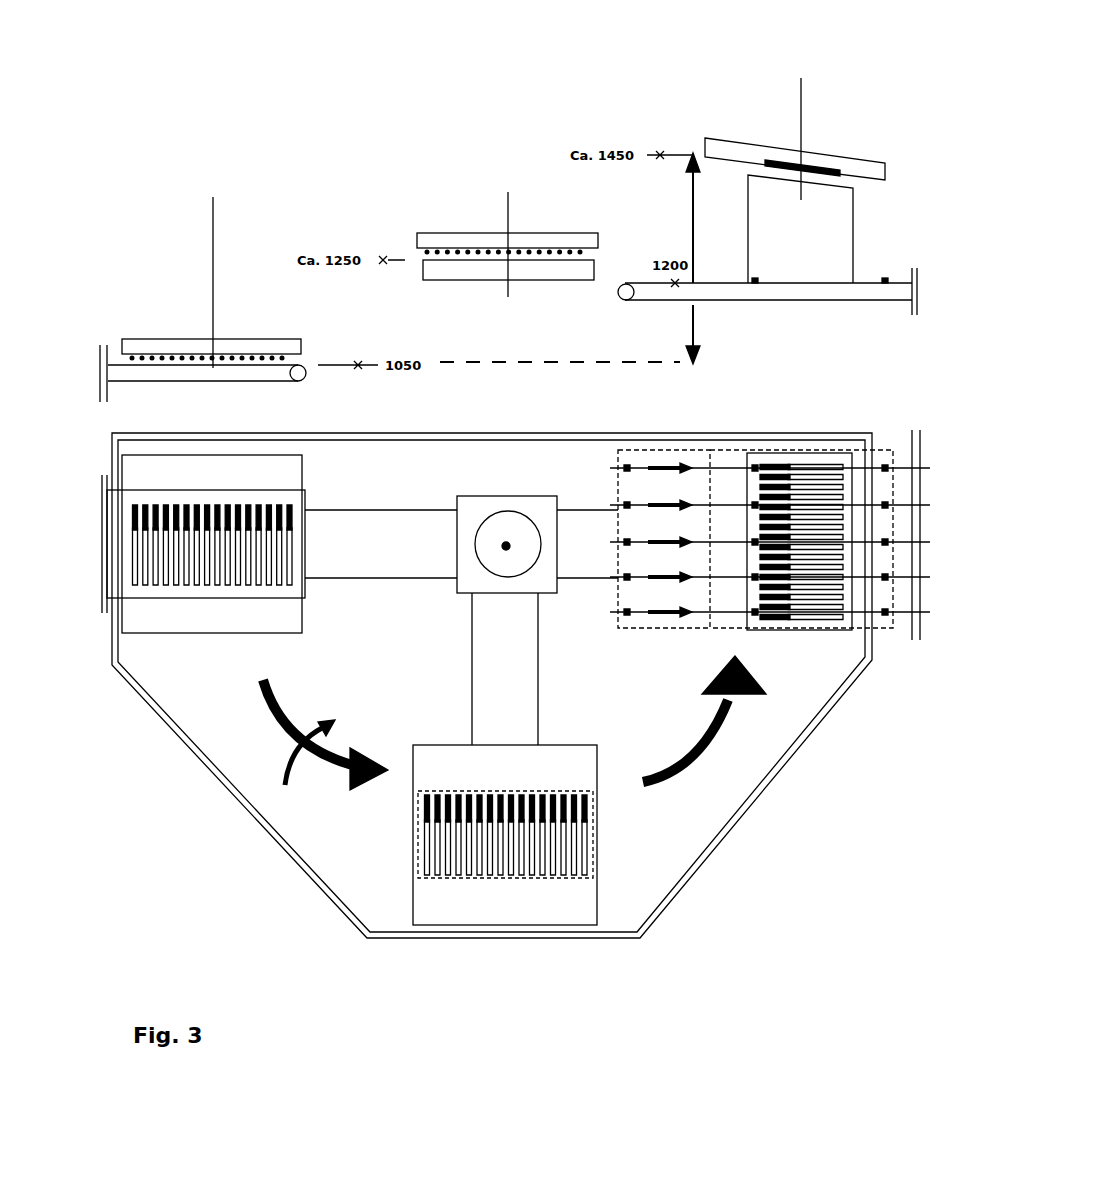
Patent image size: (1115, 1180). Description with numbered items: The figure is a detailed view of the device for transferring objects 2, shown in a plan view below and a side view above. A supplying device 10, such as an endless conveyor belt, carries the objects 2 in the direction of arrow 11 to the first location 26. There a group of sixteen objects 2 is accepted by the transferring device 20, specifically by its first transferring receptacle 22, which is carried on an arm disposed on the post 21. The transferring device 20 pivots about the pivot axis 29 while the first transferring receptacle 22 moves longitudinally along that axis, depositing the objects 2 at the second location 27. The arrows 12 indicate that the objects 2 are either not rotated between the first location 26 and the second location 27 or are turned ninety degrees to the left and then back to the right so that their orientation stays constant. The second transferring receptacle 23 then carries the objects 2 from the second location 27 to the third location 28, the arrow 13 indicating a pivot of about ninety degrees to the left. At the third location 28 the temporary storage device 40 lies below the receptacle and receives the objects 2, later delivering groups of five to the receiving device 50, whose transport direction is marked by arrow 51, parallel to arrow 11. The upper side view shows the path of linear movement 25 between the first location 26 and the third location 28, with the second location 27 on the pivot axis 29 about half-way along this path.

The objects 2 is at (255, 582).
The supplying device 10 is at (262, 376).
The arrow 11 is at (245, 544).
The arrows 12 is at (293, 747).
The arrow 13 is at (712, 757).
The transferring device 20 is at (425, 606).
The post 21 is at (472, 503).
The first transferring receptacle 22 is at (252, 343).
The second transferring receptacle 23 is at (742, 150).
The path of linear movement 25 is at (693, 207).
The first location 26 is at (120, 330).
The second location 27 is at (400, 278).
The third location 28 is at (684, 146).
The pivot axis 29 is at (508, 197).
The temporary storage device 40 is at (845, 217).
The receiving device 50 is at (828, 290).
The arrow 51 is at (668, 503).